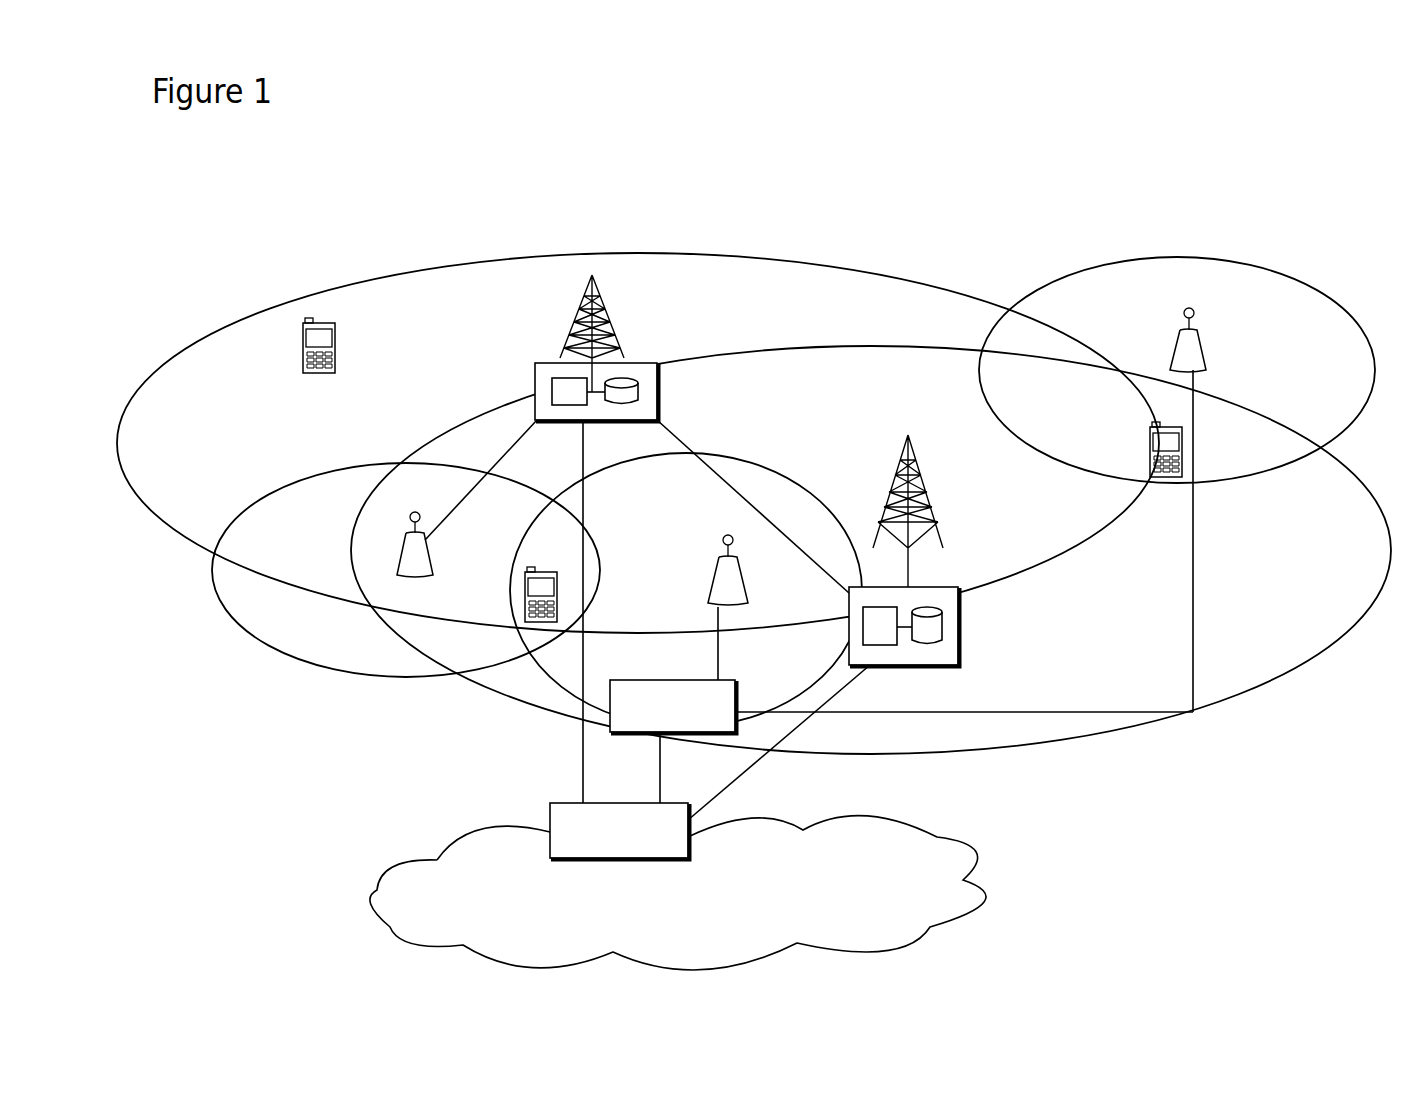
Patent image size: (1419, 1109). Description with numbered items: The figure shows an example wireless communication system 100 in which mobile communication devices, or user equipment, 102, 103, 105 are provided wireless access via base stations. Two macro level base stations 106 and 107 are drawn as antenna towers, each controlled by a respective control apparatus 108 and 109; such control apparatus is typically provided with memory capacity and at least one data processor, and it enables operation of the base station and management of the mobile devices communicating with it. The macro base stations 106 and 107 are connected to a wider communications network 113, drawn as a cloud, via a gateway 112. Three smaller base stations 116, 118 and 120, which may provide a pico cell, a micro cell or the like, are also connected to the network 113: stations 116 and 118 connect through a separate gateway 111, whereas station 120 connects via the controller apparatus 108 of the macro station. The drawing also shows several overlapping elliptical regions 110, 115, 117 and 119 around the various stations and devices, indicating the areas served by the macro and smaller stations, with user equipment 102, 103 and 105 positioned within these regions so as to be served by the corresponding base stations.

The wireless communication system 100 is at (225, 305).
The user equipment 102 is at (305, 360).
The user equipment 103 is at (525, 597).
The user equipment 105 is at (1166, 478).
The macro level base station 106 is at (575, 327).
The macro level base station 107 is at (932, 512).
The control apparatus 108 is at (535, 380).
The control apparatus 109 is at (945, 652).
The coverage area / cell 110 is at (1262, 703).
The gateway 111 is at (620, 712).
The gateway 112 is at (553, 803).
The wider communications network 113 is at (468, 866).
The small cell coverage area 115 is at (1342, 283).
The smaller base station 116 is at (1175, 342).
The small cell coverage area 117 is at (765, 467).
The smaller base station 118 is at (730, 590).
The small cell coverage area 119 is at (305, 655).
The smaller base station 120 is at (403, 548).